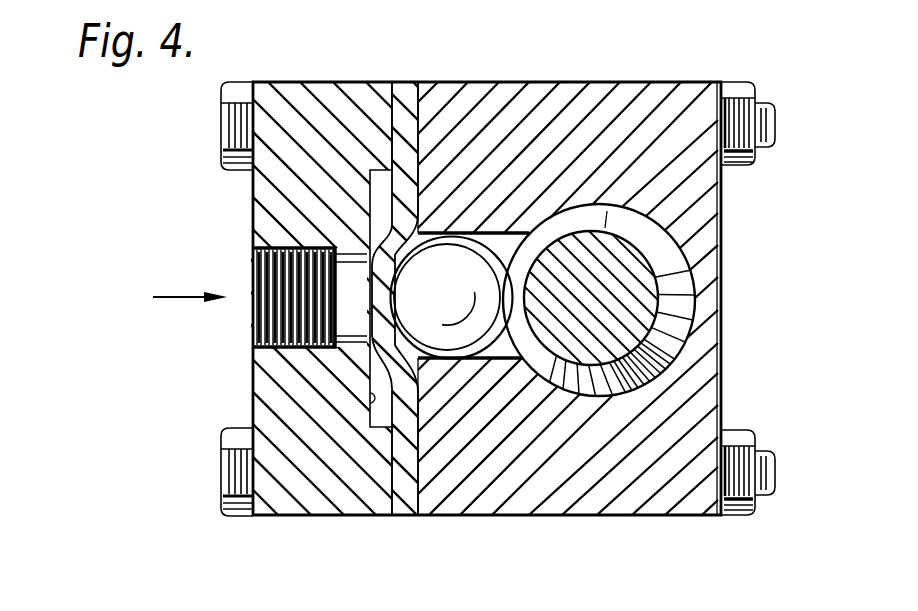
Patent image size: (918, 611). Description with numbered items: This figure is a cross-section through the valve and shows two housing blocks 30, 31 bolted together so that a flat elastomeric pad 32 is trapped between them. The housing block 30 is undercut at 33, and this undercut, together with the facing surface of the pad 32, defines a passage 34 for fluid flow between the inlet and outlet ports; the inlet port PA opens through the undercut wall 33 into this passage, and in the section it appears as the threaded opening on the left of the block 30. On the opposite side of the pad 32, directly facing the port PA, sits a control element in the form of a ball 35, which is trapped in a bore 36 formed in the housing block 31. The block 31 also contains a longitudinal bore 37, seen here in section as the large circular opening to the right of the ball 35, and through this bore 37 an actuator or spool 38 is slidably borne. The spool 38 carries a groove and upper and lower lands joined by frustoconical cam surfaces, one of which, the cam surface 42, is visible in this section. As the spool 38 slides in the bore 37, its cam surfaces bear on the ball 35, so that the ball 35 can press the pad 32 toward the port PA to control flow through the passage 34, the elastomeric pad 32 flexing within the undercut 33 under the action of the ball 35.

The housing block 30 is at (316, 76).
The housing block 31 is at (686, 77).
The flat elastomeric pad 32 is at (406, 80).
The undercut wall 33 is at (375, 403).
The passage 34 is at (375, 357).
The ball 35 is at (450, 320).
The bore 36 is at (505, 358).
The longitudinal bore 37 is at (682, 322).
The spool 38 is at (688, 229).
The frustoconical cam surface 42 is at (662, 270).
The inlet port PA is at (350, 292).